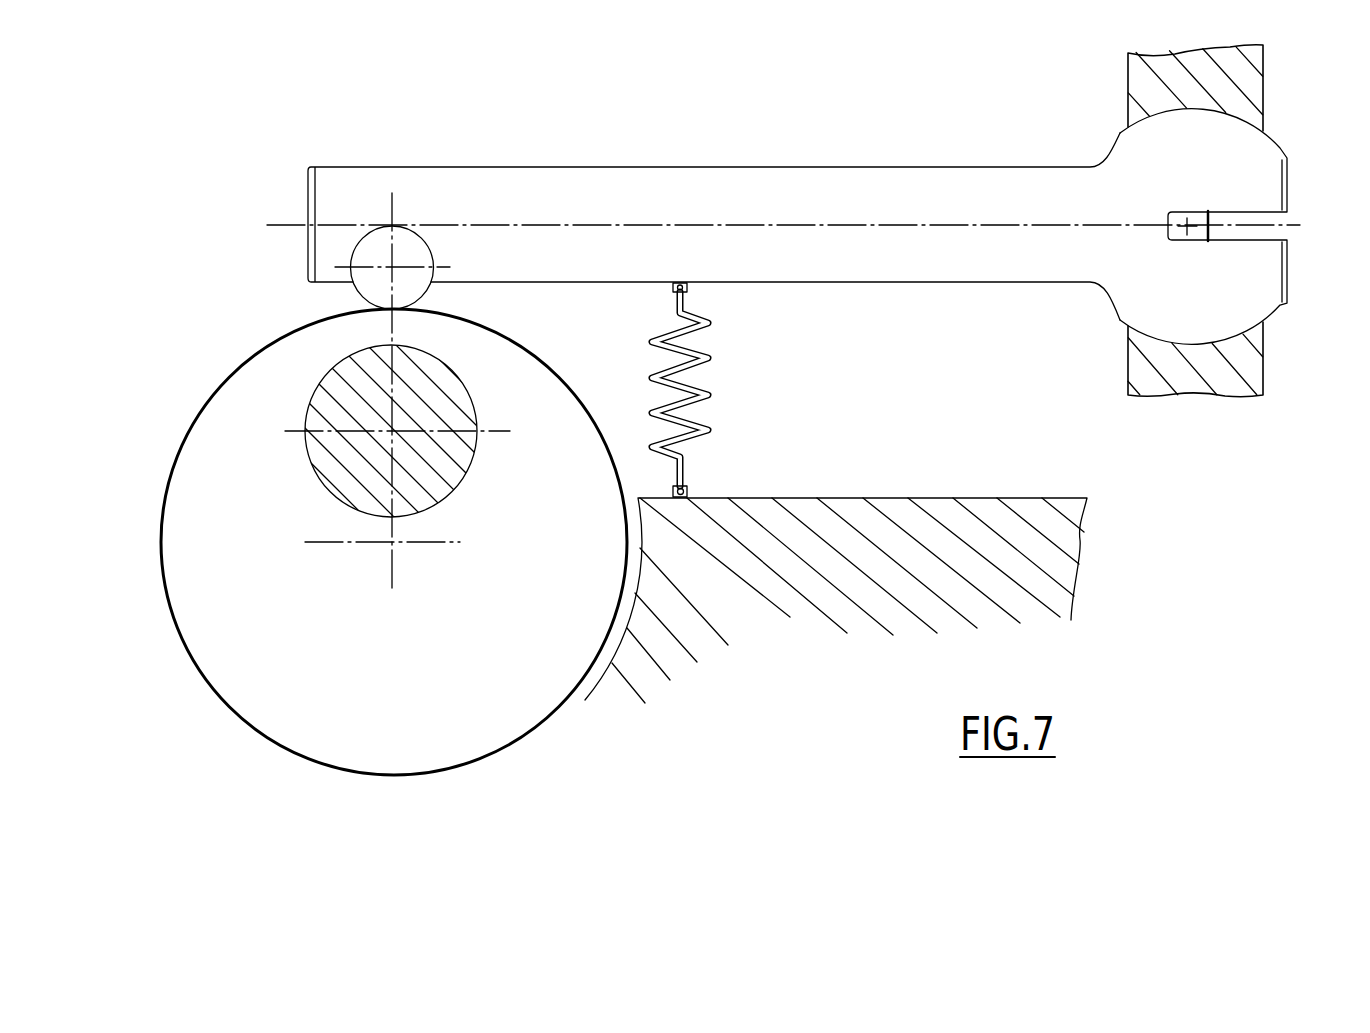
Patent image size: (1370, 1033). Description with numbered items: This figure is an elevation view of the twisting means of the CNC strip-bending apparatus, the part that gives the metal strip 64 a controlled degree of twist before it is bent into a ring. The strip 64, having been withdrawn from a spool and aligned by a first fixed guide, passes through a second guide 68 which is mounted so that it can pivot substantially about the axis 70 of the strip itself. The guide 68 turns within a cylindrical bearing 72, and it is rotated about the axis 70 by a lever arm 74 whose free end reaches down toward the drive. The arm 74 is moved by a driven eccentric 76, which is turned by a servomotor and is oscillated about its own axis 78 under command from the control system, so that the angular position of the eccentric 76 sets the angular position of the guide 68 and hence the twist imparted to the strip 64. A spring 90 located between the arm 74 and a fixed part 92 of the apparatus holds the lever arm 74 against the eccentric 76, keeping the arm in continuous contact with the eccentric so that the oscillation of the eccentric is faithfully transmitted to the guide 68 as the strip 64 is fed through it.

The strip 64 is at (1243, 362).
The second guide 68 is at (1225, 167).
The axis 70 is at (1182, 232).
The cylindrical bearing 72 is at (1148, 88).
The lever arm 74 is at (678, 178).
The driven eccentric 76 is at (226, 418).
The axis 78 is at (392, 430).
The spring 90 is at (700, 388).
The fixed support block 92 is at (764, 516).